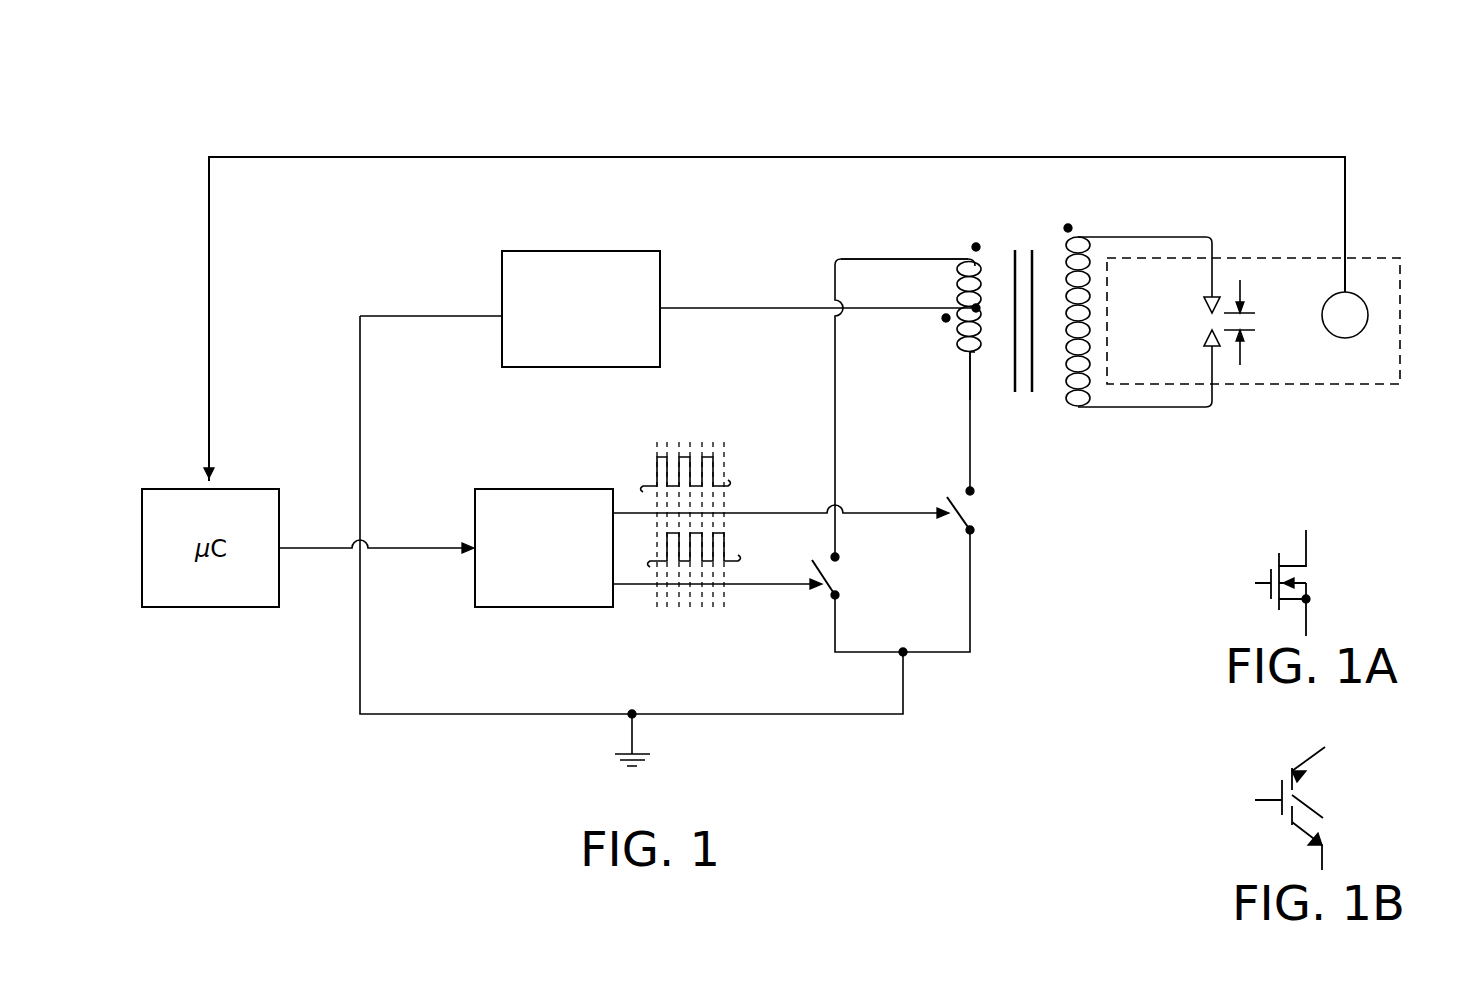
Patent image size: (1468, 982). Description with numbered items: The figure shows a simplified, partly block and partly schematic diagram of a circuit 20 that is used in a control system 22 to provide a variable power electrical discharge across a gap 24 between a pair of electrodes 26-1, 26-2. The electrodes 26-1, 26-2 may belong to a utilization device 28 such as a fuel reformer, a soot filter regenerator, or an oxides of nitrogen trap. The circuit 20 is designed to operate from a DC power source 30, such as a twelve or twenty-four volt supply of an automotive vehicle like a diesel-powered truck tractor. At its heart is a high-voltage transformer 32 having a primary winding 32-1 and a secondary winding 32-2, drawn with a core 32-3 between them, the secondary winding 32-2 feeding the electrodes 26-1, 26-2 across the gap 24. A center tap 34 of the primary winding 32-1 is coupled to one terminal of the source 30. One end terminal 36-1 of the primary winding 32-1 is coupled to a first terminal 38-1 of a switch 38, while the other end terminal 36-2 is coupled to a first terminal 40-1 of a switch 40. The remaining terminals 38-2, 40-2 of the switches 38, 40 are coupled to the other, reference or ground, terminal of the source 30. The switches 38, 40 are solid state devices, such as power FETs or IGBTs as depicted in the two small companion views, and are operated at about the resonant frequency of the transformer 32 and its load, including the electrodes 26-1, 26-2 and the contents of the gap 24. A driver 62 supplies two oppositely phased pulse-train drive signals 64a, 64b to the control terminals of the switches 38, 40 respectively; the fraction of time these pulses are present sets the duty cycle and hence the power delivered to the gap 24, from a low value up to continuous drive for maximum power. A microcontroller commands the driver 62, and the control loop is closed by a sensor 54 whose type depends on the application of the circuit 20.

The circuit 20 is at (812, 248).
The control system 22 is at (198, 115).
The gap 24 is at (1240, 362).
The electrode 26-1 is at (1207, 301).
The electrode 26-2 is at (1207, 338).
The utilization device 28 is at (1286, 292).
The DC power source 30 is at (606, 238).
The high-voltage transformer 32 is at (1026, 251).
The primary winding 32-1 is at (967, 213).
The secondary winding 32-2 is at (1096, 226).
The transformer core 32-3 is at (1022, 228).
The center tap 34 is at (960, 322).
The end terminal 36-1 is at (907, 257).
The end terminal 36-2 is at (968, 385).
The switch 38 is at (847, 596).
The first terminal 38-1 is at (837, 555).
The remaining terminal 38-2 is at (838, 597).
The switch 40 is at (1013, 523).
The first terminal 40-1 is at (972, 489).
The remaining terminal 40-2 is at (972, 529).
The sensor 54 is at (1368, 318).
The driver 62 is at (505, 607).
The drive signal 64a is at (738, 538).
The drive signal 64b is at (646, 459).